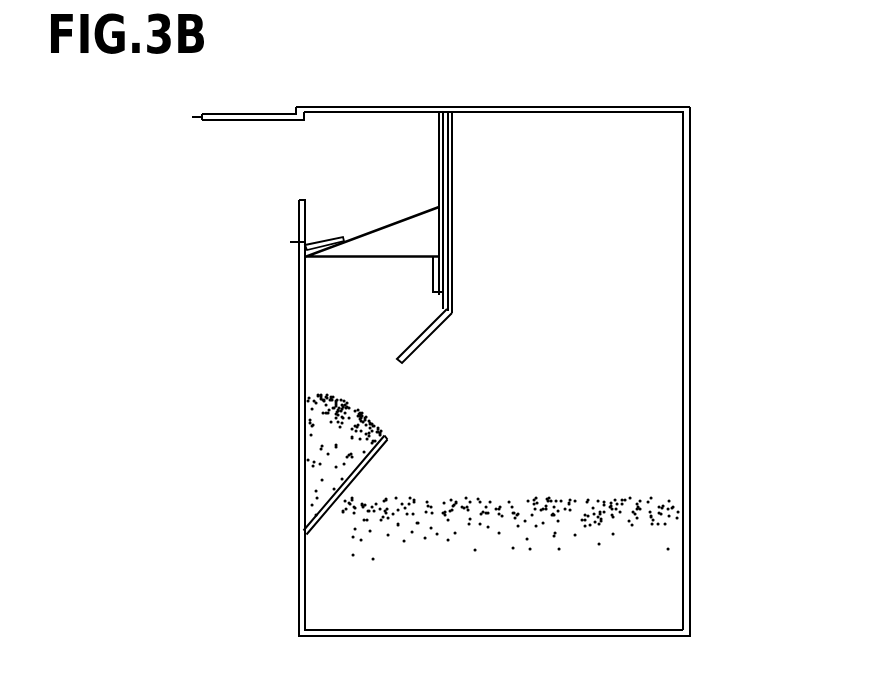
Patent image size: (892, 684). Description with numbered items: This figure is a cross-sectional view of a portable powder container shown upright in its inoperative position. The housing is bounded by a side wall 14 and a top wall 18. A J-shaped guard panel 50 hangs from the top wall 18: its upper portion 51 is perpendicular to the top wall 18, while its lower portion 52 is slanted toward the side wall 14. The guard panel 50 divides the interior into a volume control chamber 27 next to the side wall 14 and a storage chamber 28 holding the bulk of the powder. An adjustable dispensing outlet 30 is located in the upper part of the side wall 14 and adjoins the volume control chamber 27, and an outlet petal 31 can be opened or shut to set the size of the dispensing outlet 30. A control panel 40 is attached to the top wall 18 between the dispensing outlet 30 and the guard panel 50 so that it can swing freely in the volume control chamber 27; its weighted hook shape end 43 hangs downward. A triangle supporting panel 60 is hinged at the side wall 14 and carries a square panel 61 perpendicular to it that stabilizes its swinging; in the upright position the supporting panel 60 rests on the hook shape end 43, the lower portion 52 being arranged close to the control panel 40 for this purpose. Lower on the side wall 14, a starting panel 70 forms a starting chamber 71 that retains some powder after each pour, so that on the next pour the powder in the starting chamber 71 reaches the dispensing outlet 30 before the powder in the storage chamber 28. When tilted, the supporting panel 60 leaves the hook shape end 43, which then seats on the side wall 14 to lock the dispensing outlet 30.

The side wall 14 is at (297, 353).
The top wall 18 is at (595, 106).
The volume control chamber 27 is at (372, 141).
The storage chamber 28 is at (628, 485).
The adjustable dispensing outlet 30 is at (292, 177).
The outlet petal 31 is at (244, 113).
The control panel 40 is at (433, 150).
The hook shape end 43 is at (428, 277).
The guard panel 50 is at (727, 268).
The upper portion of guard panel 51 is at (455, 192).
The lower portion of guard panel 52 is at (423, 350).
The triangle supporting panel 60 is at (383, 220).
The square panel 61 is at (340, 244).
The starting panel 70 is at (330, 518).
The starting chamber 71 is at (330, 455).